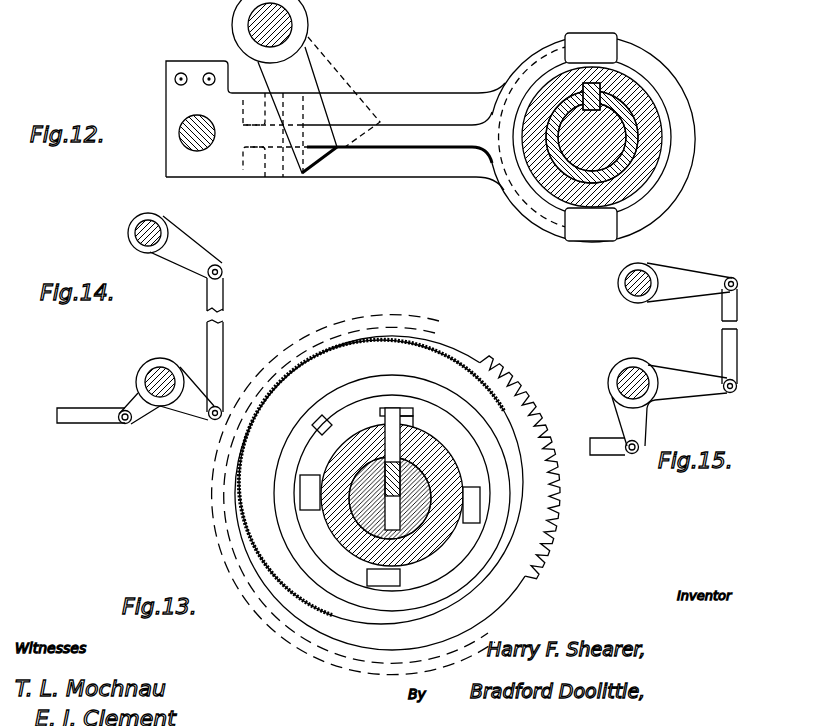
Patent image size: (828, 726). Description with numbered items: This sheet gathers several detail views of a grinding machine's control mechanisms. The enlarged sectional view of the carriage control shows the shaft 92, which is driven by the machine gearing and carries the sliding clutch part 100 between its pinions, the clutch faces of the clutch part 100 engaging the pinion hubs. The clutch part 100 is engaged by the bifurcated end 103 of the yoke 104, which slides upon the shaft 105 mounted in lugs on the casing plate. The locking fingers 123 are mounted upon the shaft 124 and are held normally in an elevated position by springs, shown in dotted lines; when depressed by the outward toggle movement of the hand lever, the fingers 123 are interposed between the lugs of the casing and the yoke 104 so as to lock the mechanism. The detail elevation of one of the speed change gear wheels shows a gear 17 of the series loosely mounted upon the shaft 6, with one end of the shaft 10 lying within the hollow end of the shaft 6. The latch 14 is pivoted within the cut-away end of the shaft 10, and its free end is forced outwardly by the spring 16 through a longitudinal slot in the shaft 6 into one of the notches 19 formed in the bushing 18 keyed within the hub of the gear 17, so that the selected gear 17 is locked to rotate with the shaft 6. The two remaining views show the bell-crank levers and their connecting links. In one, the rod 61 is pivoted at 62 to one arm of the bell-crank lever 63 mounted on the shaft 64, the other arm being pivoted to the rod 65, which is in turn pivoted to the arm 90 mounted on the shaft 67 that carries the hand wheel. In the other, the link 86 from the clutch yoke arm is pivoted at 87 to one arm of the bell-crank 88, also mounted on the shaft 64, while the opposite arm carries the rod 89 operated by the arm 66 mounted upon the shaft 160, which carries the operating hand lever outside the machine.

In FIG. 13, the shaft 6 is at (437, 475).
In FIG. 13, the shaft 10 is at (386, 520).
In FIG. 13, the latch 14 is at (393, 445).
In FIG. 13, the spring 16 is at (388, 533).
In FIG. 13, the gears 17 is at (600, 497).
In FIG. 13, the bushings 18 is at (338, 428).
In FIG. 13, the notches 19 is at (476, 500).
In FIG. 14, the rod 61 is at (85, 420).
In FIG. 14, the pivot 62 is at (130, 423).
In FIG. 14, the bell-crank lever 63 is at (138, 394).
In FIG. 14, the shaft 64 is at (158, 372).
In FIG. 15, the shaft 64 is at (612, 376).
In FIG. 14, the rod 65 is at (223, 352).
In FIG. 15, the arm 66 is at (692, 279).
In FIG. 14, the shaft 67 is at (137, 236).
In FIG. 15, the link 86 is at (608, 440).
In FIG. 15, the pivot 87 is at (630, 455).
In FIG. 15, the bell-crank 88 is at (690, 380).
In FIG. 15, the rod 89 is at (738, 352).
In FIG. 14, the arm 90 is at (193, 255).
In FIG. 12, the shaft 92 is at (615, 137).
In FIG. 12, the sliding clutch part 100 is at (678, 182).
In FIG. 12, the bifurcated end 103 is at (640, 22).
In FIG. 15, the bifurcated end 103 is at (601, 244).
In FIG. 12, the yoke 104 is at (412, 176).
In FIG. 12, the shaft 105 is at (188, 150).
In FIG. 12, the fingers 123 is at (313, 158).
In FIG. 12, the shaft 124 is at (283, 22).
In FIG. 15, the shaft 160 is at (620, 290).